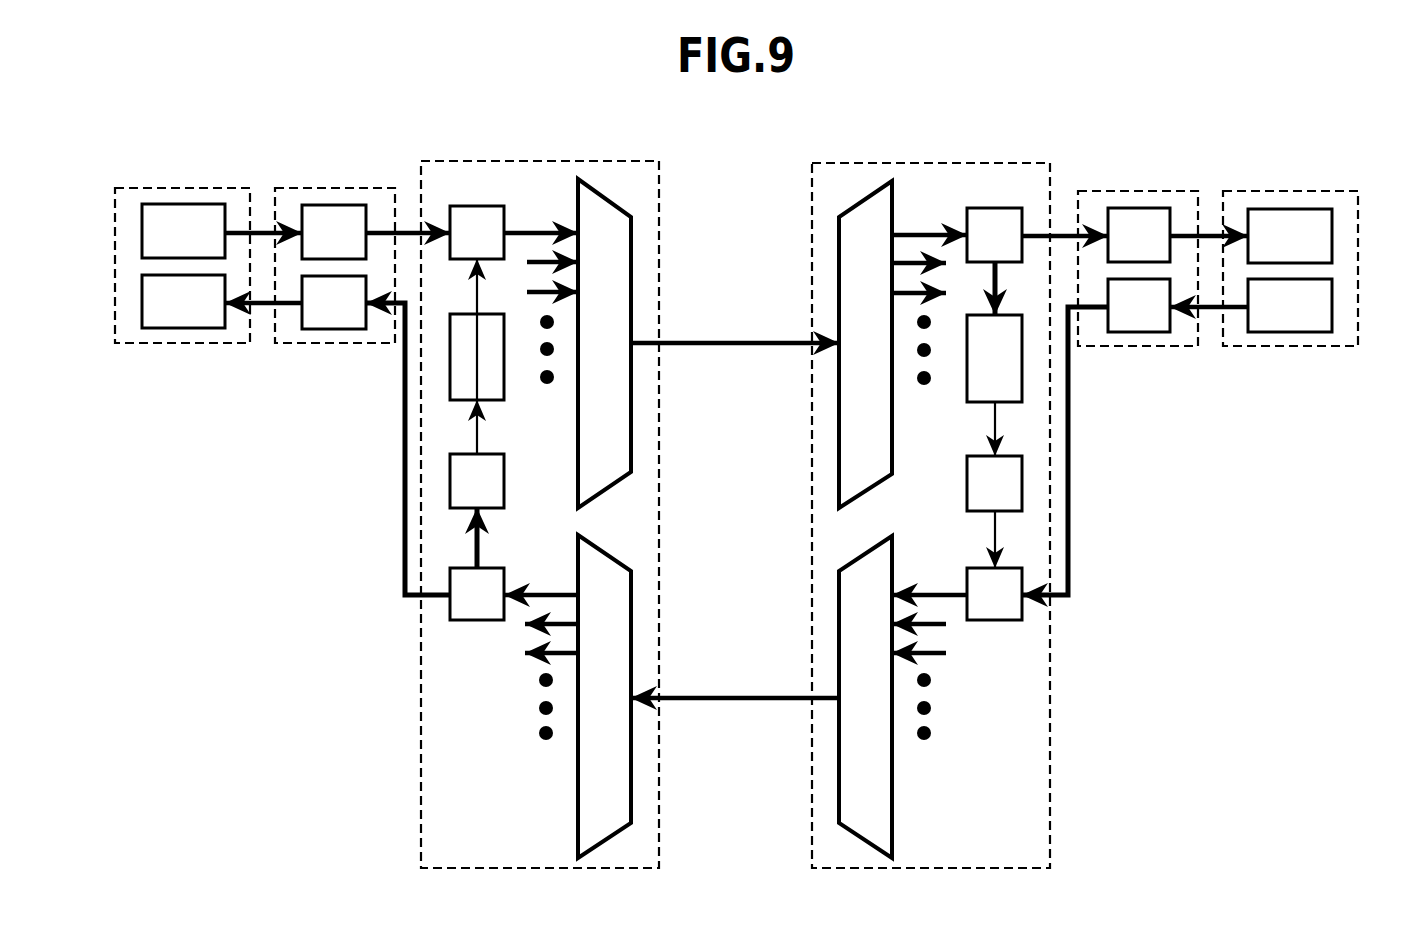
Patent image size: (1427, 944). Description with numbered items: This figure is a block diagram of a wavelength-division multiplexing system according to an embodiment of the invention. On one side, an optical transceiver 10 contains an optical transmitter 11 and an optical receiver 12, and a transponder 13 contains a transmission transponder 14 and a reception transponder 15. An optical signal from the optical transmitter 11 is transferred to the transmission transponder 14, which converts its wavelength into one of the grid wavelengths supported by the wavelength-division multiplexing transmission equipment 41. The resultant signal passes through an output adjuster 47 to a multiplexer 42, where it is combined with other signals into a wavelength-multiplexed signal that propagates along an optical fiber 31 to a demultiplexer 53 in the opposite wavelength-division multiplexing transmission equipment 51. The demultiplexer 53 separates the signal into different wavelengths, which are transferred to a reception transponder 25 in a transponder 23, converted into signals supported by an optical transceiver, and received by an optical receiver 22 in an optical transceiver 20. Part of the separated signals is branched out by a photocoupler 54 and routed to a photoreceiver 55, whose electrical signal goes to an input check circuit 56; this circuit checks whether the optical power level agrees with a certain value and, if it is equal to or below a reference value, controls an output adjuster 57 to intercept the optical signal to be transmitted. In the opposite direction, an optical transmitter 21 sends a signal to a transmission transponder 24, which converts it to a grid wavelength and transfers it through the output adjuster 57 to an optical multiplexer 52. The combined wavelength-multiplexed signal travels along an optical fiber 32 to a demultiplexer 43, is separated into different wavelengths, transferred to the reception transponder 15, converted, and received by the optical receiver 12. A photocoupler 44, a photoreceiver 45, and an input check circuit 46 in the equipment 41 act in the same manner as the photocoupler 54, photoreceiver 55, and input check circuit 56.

The optical transceiver 10 is at (135, 188).
The optical transmitter 11 is at (142, 228).
The optical receiver 12 is at (142, 300).
The transponder 13 is at (362, 188).
The transmission transponder 14 is at (312, 205).
The reception transponder 15 is at (318, 329).
The optical transceiver 20 is at (1285, 191).
The optical transmitter 21 is at (1332, 302).
The optical receiver 22 is at (1332, 230).
The transponder 23 is at (1100, 191).
The transmission transponder 24 is at (1150, 332).
The reception transponder 25 is at (1156, 208).
The optical fiber 31 is at (710, 341).
The optical fiber 32 is at (710, 700).
The wavelength-division multiplexing transmission equipment 41 is at (421, 772).
The multiplexer 42 is at (632, 378).
The demultiplexer 43 is at (633, 580).
The photocoupler 44 is at (450, 612).
The photoreceiver 45 is at (450, 478).
The input check circuit 46 is at (450, 386).
The output adjuster 47 is at (477, 206).
The wavelength-division multiplexing transmission equipment 51 is at (1050, 772).
The optical multiplexer 52 is at (839, 621).
The demultiplexer 53 is at (839, 421).
The photocoupler 54 is at (1000, 208).
The photoreceiver 55 is at (1022, 386).
The input check circuit 56 is at (1022, 478).
The output adjuster 57 is at (1022, 612).